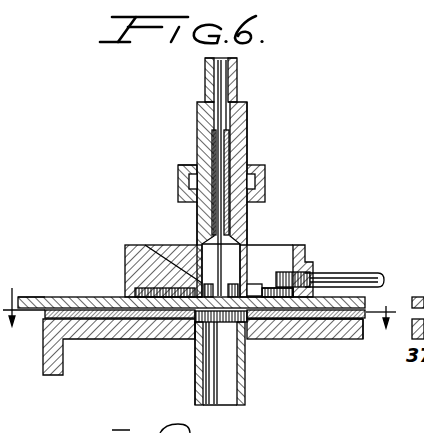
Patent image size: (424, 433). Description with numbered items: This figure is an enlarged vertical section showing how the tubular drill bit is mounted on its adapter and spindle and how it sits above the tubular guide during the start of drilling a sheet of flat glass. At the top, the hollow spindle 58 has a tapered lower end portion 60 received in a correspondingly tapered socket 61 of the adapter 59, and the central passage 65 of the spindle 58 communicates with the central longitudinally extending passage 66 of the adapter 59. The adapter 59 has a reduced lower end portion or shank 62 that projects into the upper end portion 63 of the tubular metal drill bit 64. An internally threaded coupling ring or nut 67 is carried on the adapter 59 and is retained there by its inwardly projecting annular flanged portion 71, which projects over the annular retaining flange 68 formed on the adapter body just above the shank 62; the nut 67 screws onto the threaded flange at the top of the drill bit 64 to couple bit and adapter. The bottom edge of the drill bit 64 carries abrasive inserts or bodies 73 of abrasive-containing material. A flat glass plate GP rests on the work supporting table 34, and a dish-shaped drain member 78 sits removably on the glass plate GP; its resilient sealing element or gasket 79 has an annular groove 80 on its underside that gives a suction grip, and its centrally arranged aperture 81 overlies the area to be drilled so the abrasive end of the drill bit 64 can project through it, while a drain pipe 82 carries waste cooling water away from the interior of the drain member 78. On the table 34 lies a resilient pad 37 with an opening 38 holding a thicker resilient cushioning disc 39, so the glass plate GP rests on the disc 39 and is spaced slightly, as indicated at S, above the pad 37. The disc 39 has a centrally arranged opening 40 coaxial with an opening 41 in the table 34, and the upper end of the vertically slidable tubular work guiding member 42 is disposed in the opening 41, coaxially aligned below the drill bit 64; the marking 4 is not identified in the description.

The hollow spindle 58 is at (239, 80).
The central passage 65 is at (217, 78).
The tapered socket 61 is at (197, 111).
The tapered lower end portion 60 is at (247, 120).
The adapter 59 is at (244, 145).
The reduced lower end portion or shank 62 is at (210, 212).
The central longitudinally extending passage 66 is at (214, 161).
The annular retaining flange 68 is at (178, 181).
The coupling ring or nut 67 is at (265, 172).
The inwardly projecting annular flanged portion 71 is at (178, 168).
The upper end portion 63 is at (248, 212).
The tubular metal drill bit 64 is at (250, 228).
The abrasive insert or body 73 is at (216, 292).
The resilient sealing element or gasket 79 is at (125, 279).
The dish-shaped drain member 78 is at (300, 253).
The centrally arranged aperture 81 is at (256, 289).
The drain pipe 82 is at (360, 285).
The flat glass plate GP is at (45, 300).
The annular groove 80 is at (137, 319).
The work supporting table 34 is at (98, 324).
The opening 38 is at (290, 322).
The resilient disc or cushioning member 39 is at (272, 315).
The resilient pad 37 is at (363, 323).
The centrally arranged opening 40 is at (190, 328).
The opening 41 is at (190, 340).
The tubular work guiding or work locating member 42 is at (231, 395).
The section line 4- 4 is at (199, 298).
The space S is at (41, 318).